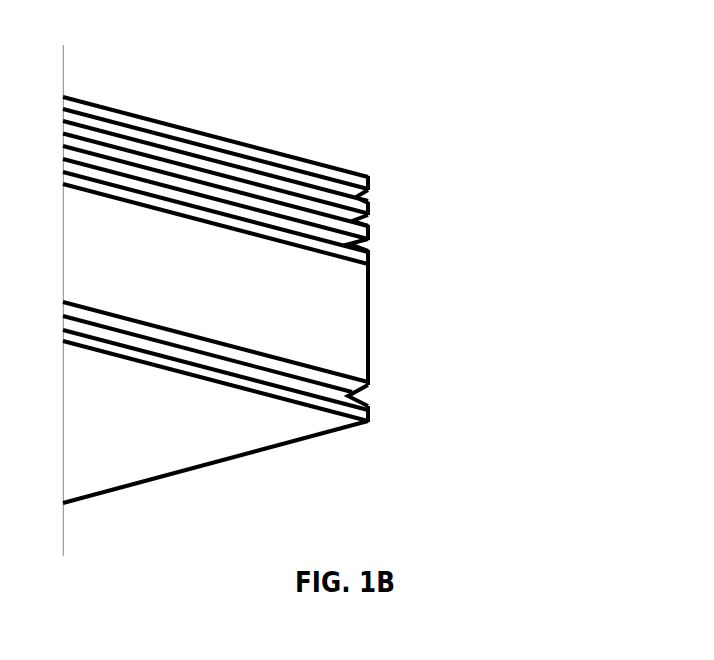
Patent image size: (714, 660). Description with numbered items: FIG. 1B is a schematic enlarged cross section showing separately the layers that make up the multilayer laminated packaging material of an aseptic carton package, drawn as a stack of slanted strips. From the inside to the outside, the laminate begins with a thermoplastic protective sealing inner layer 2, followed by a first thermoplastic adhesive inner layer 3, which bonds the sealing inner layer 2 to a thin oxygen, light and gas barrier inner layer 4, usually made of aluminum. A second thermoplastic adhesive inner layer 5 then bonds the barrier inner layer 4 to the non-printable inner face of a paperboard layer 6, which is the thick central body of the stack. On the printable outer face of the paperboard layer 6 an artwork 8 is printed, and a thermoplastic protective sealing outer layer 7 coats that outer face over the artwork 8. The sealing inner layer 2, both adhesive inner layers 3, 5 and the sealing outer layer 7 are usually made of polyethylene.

The thermoplastic protective sealing inner layer 2 is at (357, 177).
The first thermoplastic adhesive inner layer 3 is at (371, 212).
The oxygen, light and gas barrier inner layer 4 is at (369, 237).
The second thermoplastic adhesive inner layer 5 is at (368, 250).
The paperboard layer 6 is at (330, 300).
The thermoplastic protective sealing outer layer 7 is at (315, 423).
The artwork 8 is at (362, 397).